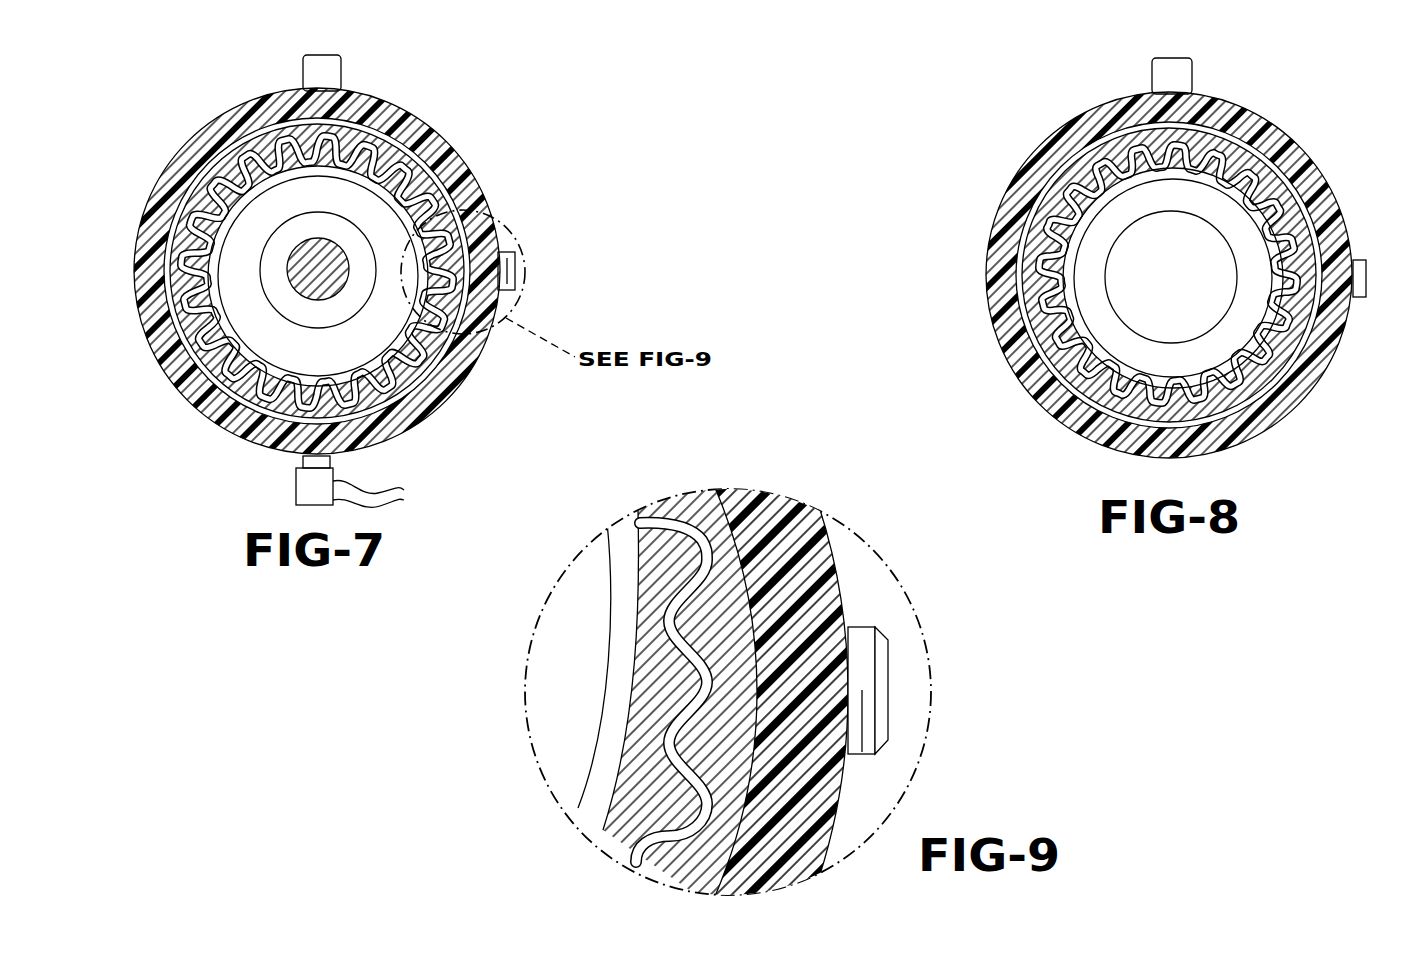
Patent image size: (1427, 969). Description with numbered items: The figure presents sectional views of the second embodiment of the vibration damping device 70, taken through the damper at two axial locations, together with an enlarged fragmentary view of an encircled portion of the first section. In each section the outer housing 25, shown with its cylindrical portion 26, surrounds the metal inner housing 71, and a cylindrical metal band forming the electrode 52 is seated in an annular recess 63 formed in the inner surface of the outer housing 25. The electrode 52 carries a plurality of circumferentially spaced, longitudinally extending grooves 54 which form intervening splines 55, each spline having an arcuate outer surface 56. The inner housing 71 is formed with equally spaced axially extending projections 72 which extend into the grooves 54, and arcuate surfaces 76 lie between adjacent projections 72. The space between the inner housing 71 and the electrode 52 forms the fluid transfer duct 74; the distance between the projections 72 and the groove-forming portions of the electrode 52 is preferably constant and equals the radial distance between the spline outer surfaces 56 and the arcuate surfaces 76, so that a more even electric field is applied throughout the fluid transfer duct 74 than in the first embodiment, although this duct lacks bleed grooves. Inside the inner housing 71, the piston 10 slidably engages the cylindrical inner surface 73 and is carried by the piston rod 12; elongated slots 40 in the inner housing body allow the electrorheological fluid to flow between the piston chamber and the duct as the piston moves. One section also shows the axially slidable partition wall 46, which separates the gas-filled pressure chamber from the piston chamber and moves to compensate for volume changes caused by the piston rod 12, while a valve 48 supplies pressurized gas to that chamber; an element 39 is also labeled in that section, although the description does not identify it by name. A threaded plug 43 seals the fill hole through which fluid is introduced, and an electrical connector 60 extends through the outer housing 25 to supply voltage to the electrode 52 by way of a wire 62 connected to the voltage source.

In FIG. 7, the piston 10 is at (383, 320).
In FIG. 7, the piston rod 12 is at (333, 288).
In FIG. 7, the outer housing 25 is at (466, 142).
In FIG. 8, the outer housing 25 is at (1320, 147).
In FIG. 9, the outer housing 25 is at (857, 571).
In FIG. 7, the cylindrical portion 26 is at (462, 177).
In FIG. 8, the cylindrical portion 26 is at (1320, 181).
In FIG. 9, the cylindrical portion 26 is at (823, 552).
In FIG. 8, the bore 39 is at (1203, 268).
In FIG. 8, the elongated slots 40 is at (1290, 279).
In FIG. 7, the threaded plug 43 is at (516, 268).
In FIG. 8, the threaded plug 43 is at (1368, 273).
In FIG. 9, the threaded plug 43 is at (880, 690).
In FIG. 8, the partition wall 46 is at (1225, 338).
In FIG. 7, the valve 48 is at (341, 62).
In FIG. 8, the valve 48 is at (1192, 66).
In FIG. 7, the electrode 52 is at (228, 165).
In FIG. 8, the electrode 52 is at (1072, 172).
In FIG. 9, the electrode 52 is at (695, 492).
In FIG. 7, the grooves 54 is at (204, 185).
In FIG. 8, the grooves 54 is at (1054, 182).
In FIG. 9, the grooves 54 is at (717, 886).
In FIG. 7, the splines 55 is at (262, 160).
In FIG. 8, the splines 55 is at (1112, 160).
In FIG. 9, the splines 55 is at (682, 760).
In FIG. 7, the arcuate outer surface 56 is at (190, 256).
In FIG. 8, the arcuate outer surface 56 is at (1040, 263).
In FIG. 9, the arcuate outer surface 56 is at (680, 628).
In FIG. 7, the electrical connector 60 is at (296, 481).
In FIG. 7, the wire 62 is at (386, 494).
In FIG. 9, the annular recess 63 is at (714, 869).
In FIG. 7, the vibration damping device 70 is at (470, 88).
In FIG. 8, the vibration damping device 70 is at (1320, 95).
In FIG. 7, the inner housing 71 is at (218, 363).
In FIG. 8, the inner housing 71 is at (1062, 367).
In FIG. 9, the inner housing 71 is at (600, 850).
In FIG. 7, the projections 72 is at (196, 231).
In FIG. 8, the projections 72 is at (1040, 233).
In FIG. 9, the projections 72 is at (675, 812).
In FIG. 9, the cylindrical inner surface 73 is at (628, 690).
In FIG. 7, the fluid transfer duct 74 is at (198, 311).
In FIG. 8, the fluid transfer duct 74 is at (1050, 316).
In FIG. 9, the fluid transfer duct 74 is at (667, 652).
In FIG. 7, the arcuate surfaces 76 is at (200, 208).
In FIG. 8, the arcuate surfaces 76 is at (1050, 209).
In FIG. 9, the arcuate surfaces 76 is at (663, 740).